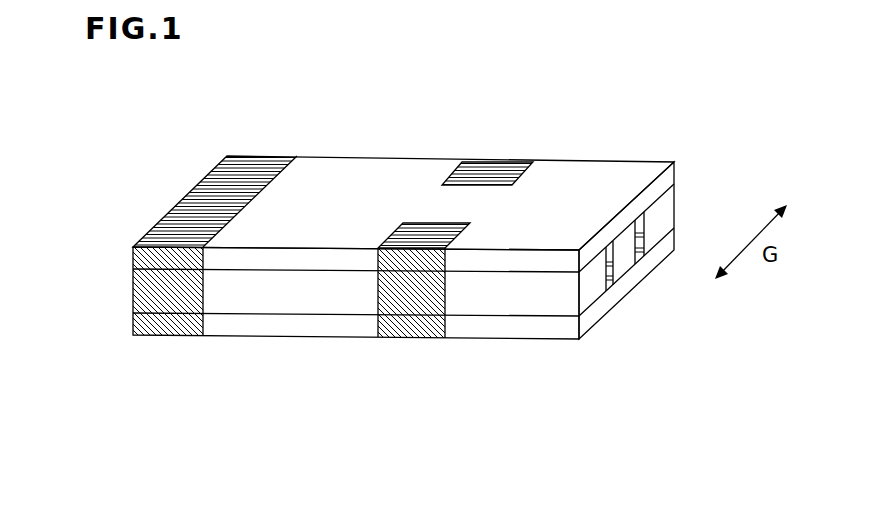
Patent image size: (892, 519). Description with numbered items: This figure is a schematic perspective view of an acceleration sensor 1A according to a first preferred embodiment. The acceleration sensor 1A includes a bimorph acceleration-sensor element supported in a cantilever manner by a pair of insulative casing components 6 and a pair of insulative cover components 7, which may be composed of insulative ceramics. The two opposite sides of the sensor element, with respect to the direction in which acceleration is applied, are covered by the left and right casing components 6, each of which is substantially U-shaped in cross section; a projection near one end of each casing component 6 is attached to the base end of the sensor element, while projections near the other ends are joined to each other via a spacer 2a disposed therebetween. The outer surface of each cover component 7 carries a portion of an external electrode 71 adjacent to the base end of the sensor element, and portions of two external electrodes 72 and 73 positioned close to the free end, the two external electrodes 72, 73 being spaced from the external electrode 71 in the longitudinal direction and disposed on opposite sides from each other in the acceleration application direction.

The acceleration sensor 1A is at (162, 160).
The insulative casing component 6 is at (258, 302).
The insulative cover component 7 is at (353, 170).
The external electrode 71 is at (248, 163).
The external electrode 72 is at (408, 222).
The external electrode 73 is at (497, 172).
The spacer 2a is at (627, 263).